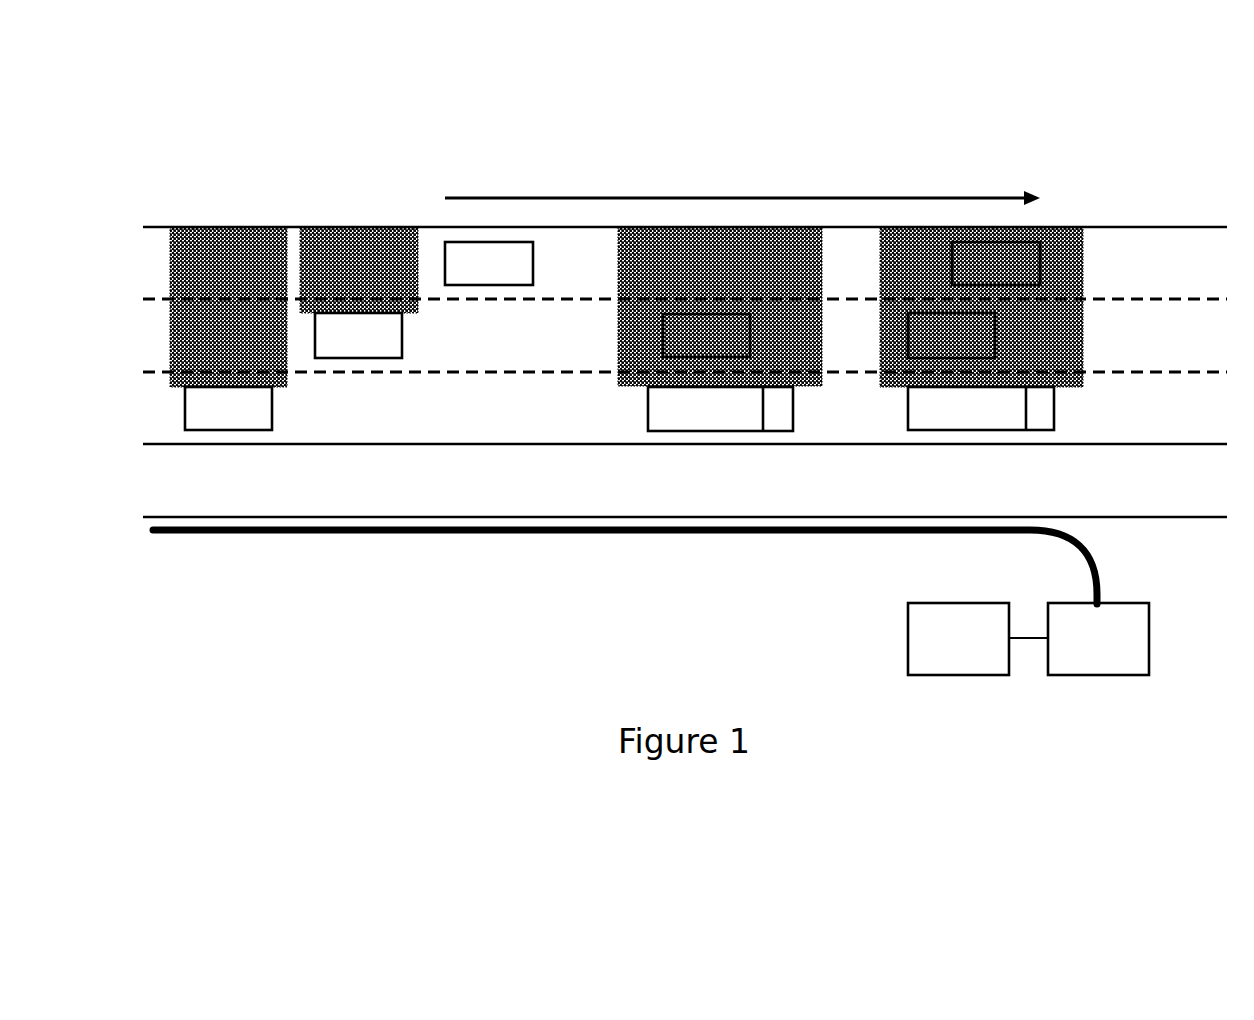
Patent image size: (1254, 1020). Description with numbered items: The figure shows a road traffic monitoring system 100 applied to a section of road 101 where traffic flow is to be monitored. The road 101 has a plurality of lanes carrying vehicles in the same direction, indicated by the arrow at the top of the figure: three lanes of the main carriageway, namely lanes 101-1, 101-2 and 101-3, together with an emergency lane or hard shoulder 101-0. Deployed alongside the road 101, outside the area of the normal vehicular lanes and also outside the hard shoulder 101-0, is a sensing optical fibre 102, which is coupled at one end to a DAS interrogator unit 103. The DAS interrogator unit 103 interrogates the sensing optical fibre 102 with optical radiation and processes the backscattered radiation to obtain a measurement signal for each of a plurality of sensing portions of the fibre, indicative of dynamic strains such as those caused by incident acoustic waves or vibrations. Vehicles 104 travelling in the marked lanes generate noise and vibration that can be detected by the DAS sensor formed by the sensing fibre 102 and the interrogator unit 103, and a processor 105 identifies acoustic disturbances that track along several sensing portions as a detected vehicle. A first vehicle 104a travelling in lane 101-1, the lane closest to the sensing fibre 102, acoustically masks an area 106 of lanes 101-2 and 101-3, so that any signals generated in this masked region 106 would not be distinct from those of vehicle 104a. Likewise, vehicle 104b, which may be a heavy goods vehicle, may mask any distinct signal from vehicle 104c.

The road traffic monitoring system 100 is at (365, 143).
The road 101 is at (1113, 228).
The hard shoulder 101-0 is at (1174, 490).
The normal vehicle lane 101-1 is at (1174, 418).
The normal vehicle lane 101-2 is at (1174, 346).
The normal vehicle lane 101-3 is at (1174, 273).
The sensing optical fibre 102 is at (503, 535).
The DAS interrogator unit 103 is at (1118, 652).
The vehicles 104 is at (490, 240).
The first vehicle 104a is at (213, 430).
The vehicle 104b is at (705, 430).
The vehicle 104c is at (722, 314).
The processor 105 is at (978, 652).
The masked region 106 is at (258, 242).